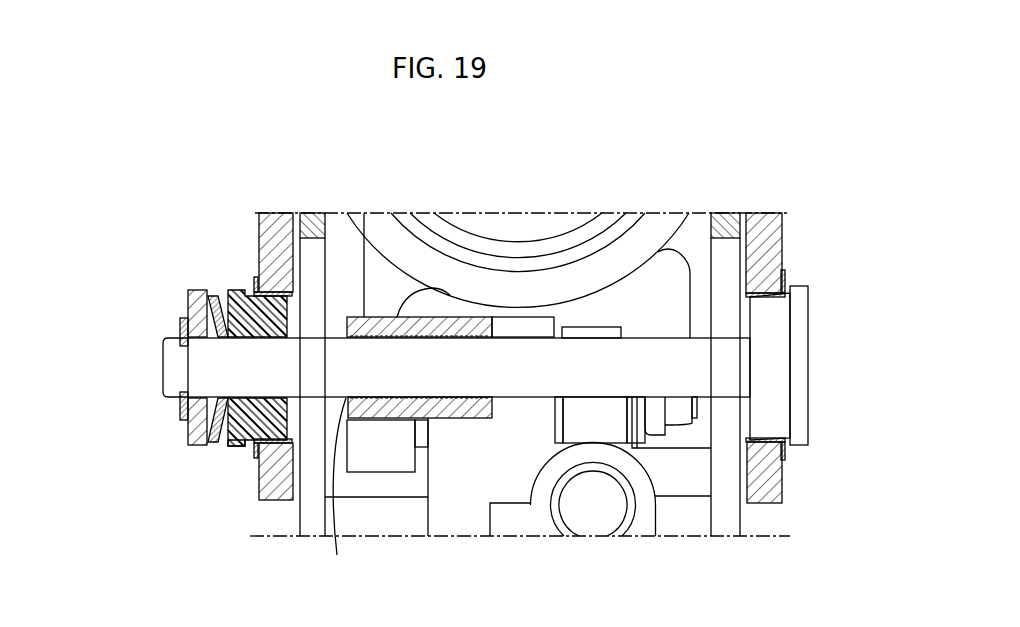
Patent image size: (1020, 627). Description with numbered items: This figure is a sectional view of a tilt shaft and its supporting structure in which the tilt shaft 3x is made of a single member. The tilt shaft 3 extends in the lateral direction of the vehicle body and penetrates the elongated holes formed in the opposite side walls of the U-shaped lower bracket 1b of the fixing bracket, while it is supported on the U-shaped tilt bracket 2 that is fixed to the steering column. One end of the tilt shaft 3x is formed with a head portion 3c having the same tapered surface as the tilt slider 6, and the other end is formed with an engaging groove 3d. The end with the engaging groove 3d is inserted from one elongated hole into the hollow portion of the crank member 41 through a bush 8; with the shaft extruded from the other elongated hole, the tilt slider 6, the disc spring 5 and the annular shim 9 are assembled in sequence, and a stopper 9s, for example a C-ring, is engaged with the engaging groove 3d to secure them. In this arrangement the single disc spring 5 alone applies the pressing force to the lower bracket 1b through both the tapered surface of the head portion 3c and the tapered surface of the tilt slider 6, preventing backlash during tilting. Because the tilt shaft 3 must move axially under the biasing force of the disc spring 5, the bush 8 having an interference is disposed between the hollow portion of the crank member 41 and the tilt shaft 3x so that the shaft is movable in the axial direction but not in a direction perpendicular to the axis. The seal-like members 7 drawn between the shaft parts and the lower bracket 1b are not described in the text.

The lower bracket 1b is at (263, 228).
The tilt bracket 2 is at (304, 212).
The tilt shaft 3 is at (469, 367).
The head portion 3c is at (785, 415).
The engaging groove 3d is at (183, 375).
The tilt shaft 3x is at (802, 280).
The disc spring 5 is at (220, 295).
The tilt slider 6 is at (237, 440).
The seal member 7 is at (256, 278).
The bush 8 is at (339, 487).
The annular shim 9 is at (193, 302).
The stopper 9s is at (182, 317).
The crank member 41 is at (377, 453).